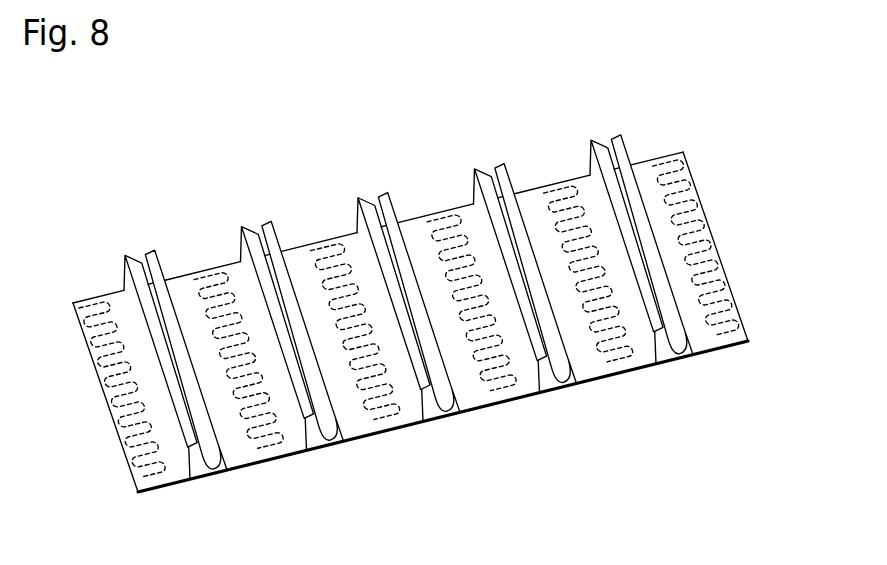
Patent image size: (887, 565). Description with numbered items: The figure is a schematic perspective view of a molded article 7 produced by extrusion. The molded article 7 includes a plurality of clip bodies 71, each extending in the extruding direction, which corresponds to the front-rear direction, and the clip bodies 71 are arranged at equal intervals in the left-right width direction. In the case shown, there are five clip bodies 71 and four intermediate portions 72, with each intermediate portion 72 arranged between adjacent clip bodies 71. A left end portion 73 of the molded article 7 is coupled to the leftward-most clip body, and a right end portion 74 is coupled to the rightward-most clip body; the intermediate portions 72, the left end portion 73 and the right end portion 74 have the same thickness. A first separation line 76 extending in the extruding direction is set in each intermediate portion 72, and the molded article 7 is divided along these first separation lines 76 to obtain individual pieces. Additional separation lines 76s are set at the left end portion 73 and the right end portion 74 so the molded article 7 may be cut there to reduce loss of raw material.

The molded article 7 is at (32, 234).
The clip body 71 is at (410, 327).
The intermediate portion 72 is at (411, 343).
The left end portion 73 is at (132, 414).
The right end portion 74 is at (690, 274).
The first separation line 76 is at (565, 164).
The separation line 76s is at (652, 148).